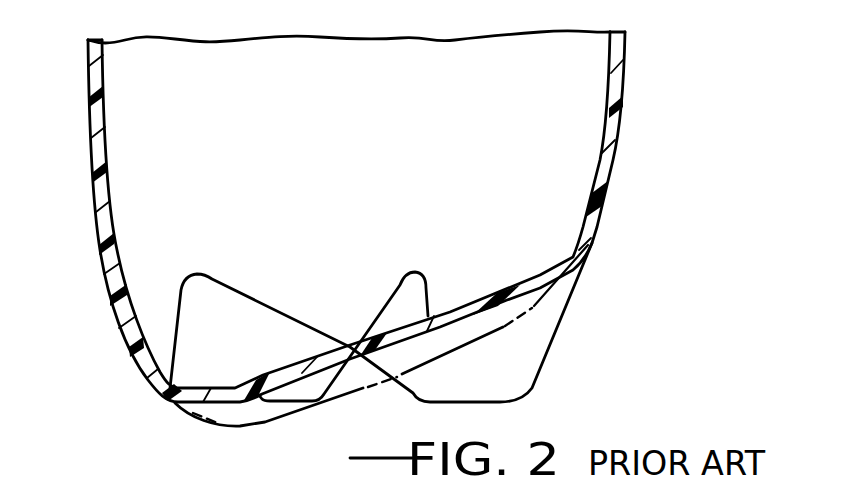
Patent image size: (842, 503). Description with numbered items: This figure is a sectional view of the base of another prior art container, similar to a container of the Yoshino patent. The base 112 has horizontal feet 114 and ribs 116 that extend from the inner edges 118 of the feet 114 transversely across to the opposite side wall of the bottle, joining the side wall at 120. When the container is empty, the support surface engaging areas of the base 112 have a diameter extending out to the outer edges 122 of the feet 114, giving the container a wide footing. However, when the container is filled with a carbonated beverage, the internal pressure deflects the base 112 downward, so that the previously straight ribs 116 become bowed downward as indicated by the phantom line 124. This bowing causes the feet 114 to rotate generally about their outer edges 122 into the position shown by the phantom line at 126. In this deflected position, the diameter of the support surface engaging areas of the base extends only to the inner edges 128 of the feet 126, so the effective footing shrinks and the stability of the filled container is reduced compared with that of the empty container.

The base 112 is at (95, 301).
The horizontal feet 114 is at (220, 388).
The ribs 116 is at (468, 296).
The inner edges of feet 118 is at (240, 400).
The rib-to-side wall joint 120 is at (587, 266).
The outer edges of feet 122 is at (175, 404).
The phantom line (bowed rib) 124 is at (480, 350).
The phantom line (deflected feet position) 126 is at (200, 416).
The inner edges of feet in deflected position 128 is at (252, 426).